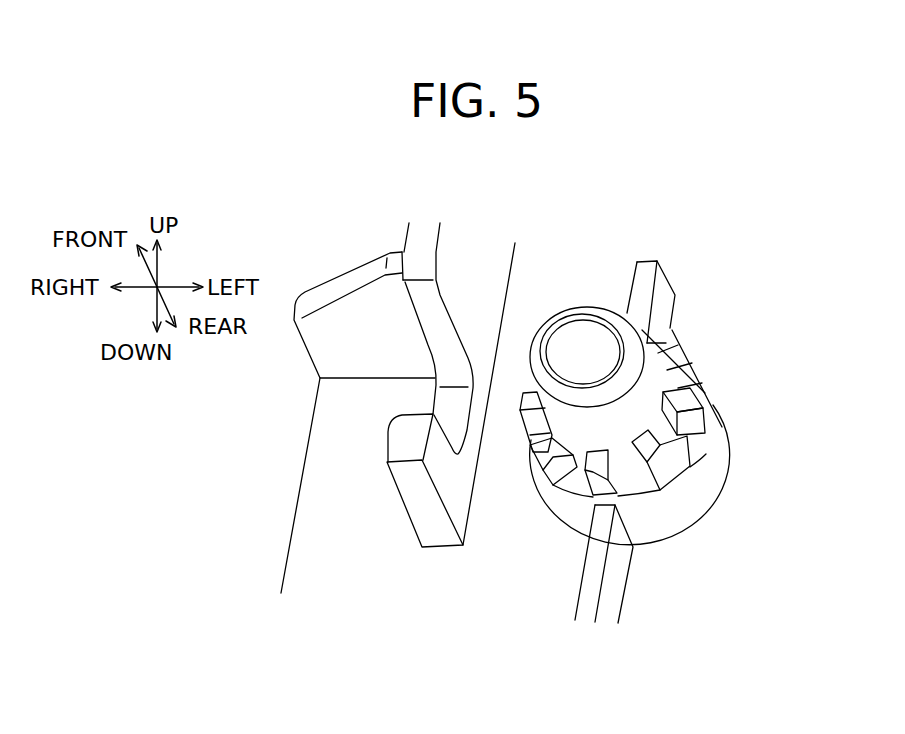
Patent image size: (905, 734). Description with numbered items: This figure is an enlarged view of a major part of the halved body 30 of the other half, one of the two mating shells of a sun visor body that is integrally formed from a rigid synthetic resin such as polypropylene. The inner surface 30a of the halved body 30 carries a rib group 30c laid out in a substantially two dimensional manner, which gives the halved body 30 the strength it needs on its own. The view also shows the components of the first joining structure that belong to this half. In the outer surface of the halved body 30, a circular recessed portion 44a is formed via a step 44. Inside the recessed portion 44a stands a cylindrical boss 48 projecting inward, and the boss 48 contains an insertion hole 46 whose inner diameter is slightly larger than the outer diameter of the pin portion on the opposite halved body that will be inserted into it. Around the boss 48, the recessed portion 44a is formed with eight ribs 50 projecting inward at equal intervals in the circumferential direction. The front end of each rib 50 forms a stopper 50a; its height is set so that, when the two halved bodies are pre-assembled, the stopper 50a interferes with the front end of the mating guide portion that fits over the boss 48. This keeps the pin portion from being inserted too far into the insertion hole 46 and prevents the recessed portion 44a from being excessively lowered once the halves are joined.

The halved body of the other half 30 is at (773, 253).
The inner surface 30a is at (332, 491).
The rib group 30c is at (592, 585).
The step 44 is at (683, 508).
The recessed portion 44a is at (687, 447).
The insertion hole 46 is at (580, 327).
The boss 48 is at (652, 387).
The rib 50 is at (703, 398).
The stopper 50a is at (680, 390).